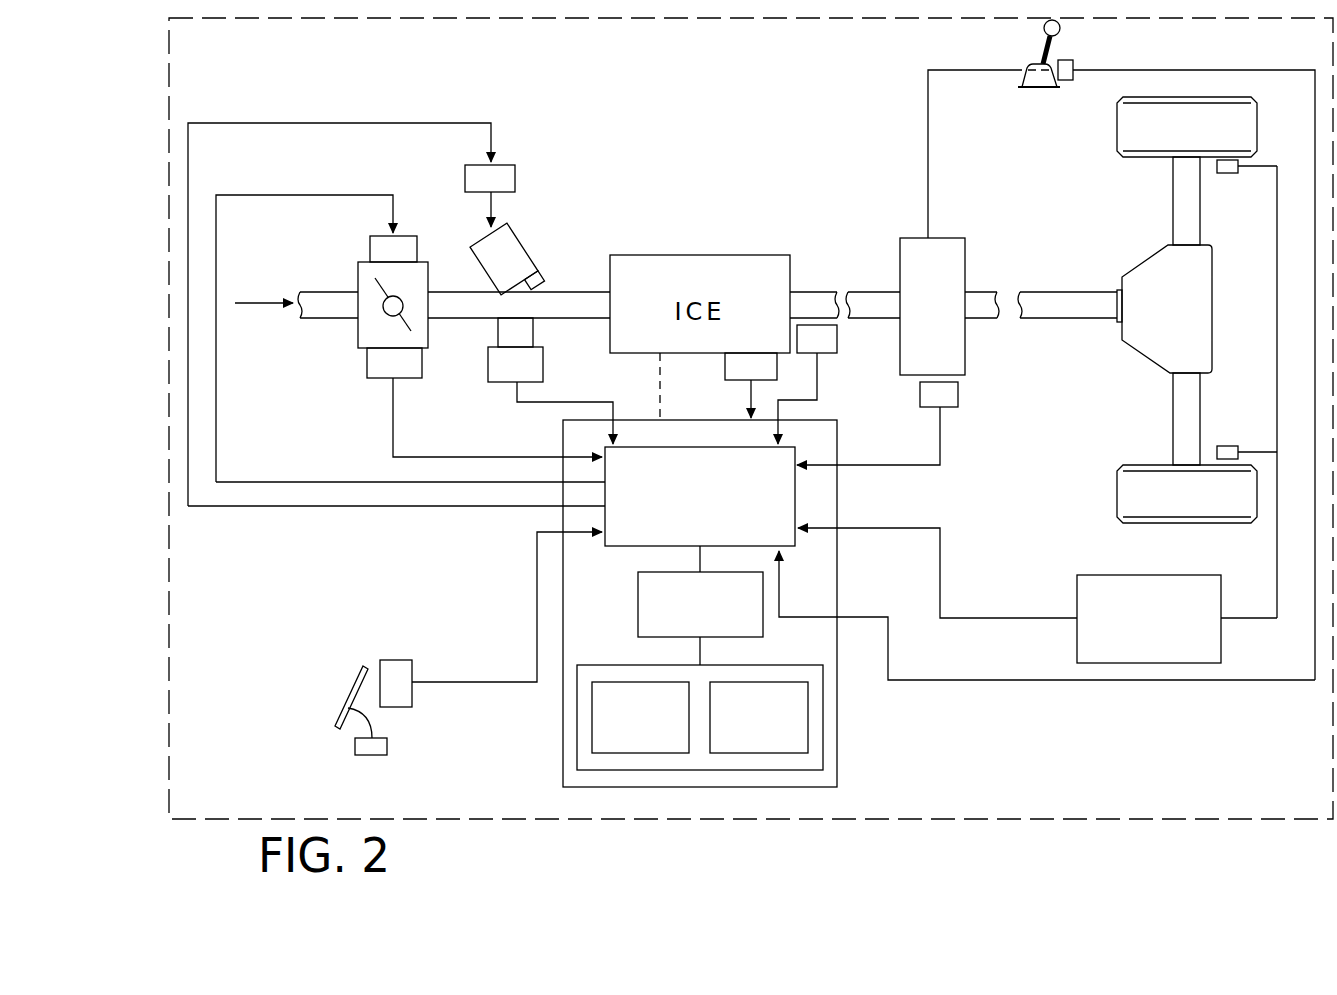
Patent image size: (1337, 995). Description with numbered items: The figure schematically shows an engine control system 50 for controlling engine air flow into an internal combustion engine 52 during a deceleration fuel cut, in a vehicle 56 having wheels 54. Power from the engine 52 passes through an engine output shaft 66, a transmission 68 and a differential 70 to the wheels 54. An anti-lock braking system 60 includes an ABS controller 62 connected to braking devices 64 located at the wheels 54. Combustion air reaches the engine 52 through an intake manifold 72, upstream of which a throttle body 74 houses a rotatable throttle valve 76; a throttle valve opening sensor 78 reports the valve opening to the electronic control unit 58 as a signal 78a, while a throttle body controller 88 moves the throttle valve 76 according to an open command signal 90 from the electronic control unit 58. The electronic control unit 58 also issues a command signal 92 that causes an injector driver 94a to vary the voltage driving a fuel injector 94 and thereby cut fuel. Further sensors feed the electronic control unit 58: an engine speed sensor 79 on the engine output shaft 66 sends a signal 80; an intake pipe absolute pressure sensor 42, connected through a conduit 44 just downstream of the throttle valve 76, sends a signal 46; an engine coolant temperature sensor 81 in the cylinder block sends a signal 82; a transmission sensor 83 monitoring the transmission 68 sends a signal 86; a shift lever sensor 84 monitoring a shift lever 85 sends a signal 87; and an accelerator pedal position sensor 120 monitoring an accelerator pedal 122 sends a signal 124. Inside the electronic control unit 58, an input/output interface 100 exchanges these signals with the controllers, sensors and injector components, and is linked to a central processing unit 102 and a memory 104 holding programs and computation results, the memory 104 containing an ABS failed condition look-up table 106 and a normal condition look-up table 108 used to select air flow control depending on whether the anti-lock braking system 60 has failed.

The intake pipe absolute pressure (PBA) sensor 42 is at (543, 365).
The conduit 44 is at (533, 331).
The signal 46 is at (537, 405).
The engine control system 50 is at (493, 604).
The internal combustion engine 52 is at (652, 355).
The wheels 54 is at (1117, 137).
The vehicle 56 is at (1272, 808).
The electronic control unit (ECU) 58 is at (837, 693).
The anti-lock braking system (ABS) 60 is at (1293, 578).
The ABS controller 62 is at (1096, 575).
The braking devices 64 is at (1226, 174).
The engine output shaft 66 is at (808, 300).
The transmission 68 is at (915, 238).
The differential 70 is at (1145, 357).
The intake manifold 72 is at (570, 292).
The throttle body 74 is at (358, 330).
The throttle valve 76 is at (412, 331).
The throttle valve opening sensor 78 is at (375, 382).
The signal 78a is at (468, 456).
The engine speed (Ne) sensor 79 is at (830, 353).
The signal 80 is at (820, 397).
The engine coolant temperature (TW) sensor 81 is at (725, 365).
The signal 82 is at (745, 390).
The transmission sensor 83 is at (955, 407).
The shift lever sensor 84 is at (1066, 60).
The shift lever 85 is at (1038, 78).
The signal 86 is at (941, 448).
The signal 87 is at (978, 680).
The throttle body controller 88 is at (403, 236).
The open command signal 90 is at (247, 197).
The command signal 92 is at (280, 508).
The fuel injector 94 is at (523, 230).
The injector driver 94a is at (515, 178).
The input/output (I/O) interface 100 is at (633, 548).
The central processing unit (CPU) 102 is at (638, 610).
The memory 104 is at (577, 690).
The ABS failed condition look-up table 106 is at (592, 735).
The normal condition look-up table 108 is at (808, 735).
The accelerator pedal position sensor 120 is at (352, 710).
The accelerator pedal 122 is at (412, 703).
The signal 124 is at (490, 680).